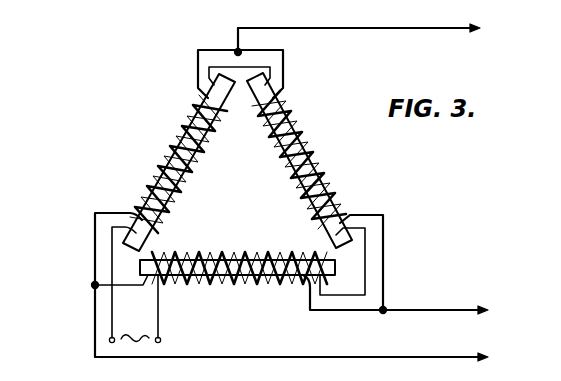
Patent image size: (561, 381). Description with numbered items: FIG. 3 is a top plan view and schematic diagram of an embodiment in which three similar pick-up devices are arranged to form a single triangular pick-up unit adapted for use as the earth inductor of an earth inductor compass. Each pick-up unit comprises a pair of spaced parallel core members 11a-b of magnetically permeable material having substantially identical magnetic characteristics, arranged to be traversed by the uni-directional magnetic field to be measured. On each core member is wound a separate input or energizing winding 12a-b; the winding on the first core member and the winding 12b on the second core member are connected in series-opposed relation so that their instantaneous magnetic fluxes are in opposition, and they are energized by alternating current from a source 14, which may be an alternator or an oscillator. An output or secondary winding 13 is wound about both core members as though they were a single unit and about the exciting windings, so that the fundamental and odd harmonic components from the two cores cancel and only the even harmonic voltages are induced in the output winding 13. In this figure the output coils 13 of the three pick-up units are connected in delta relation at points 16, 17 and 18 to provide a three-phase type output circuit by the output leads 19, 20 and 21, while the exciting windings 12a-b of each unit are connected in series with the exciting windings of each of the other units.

The core members 11a-b is at (257, 92).
The input or energizing windings 12a-b is at (153, 185).
The output or secondary winding 13 is at (167, 157).
The source 14 is at (127, 0).
The input or energizing winding 12b is at (450, 4).
The point 16 is at (95, 285).
The point 17 is at (236, 50).
The point 18 is at (385, 309).
The output lead 19 is at (371, 356).
The output lead 20 is at (347, 28).
The output lead 21 is at (452, 309).